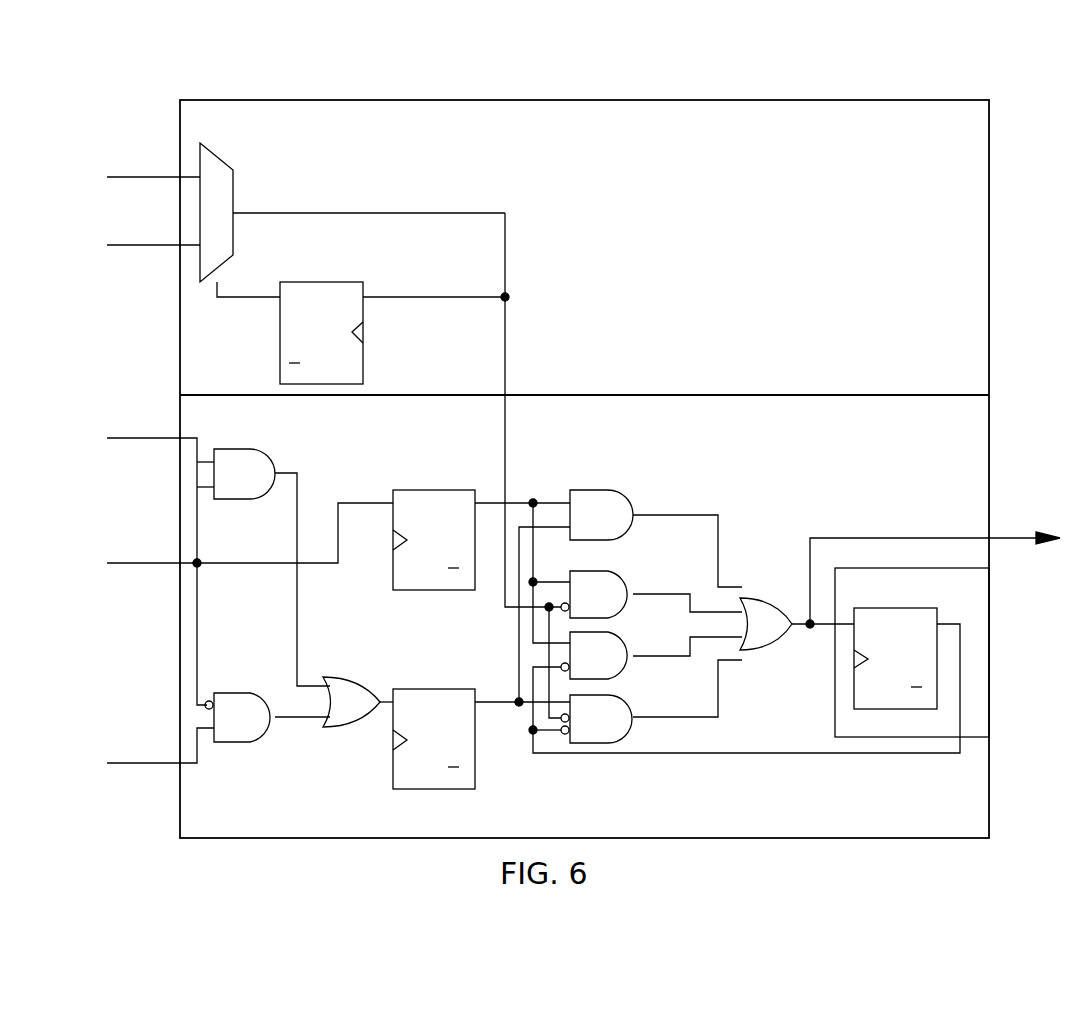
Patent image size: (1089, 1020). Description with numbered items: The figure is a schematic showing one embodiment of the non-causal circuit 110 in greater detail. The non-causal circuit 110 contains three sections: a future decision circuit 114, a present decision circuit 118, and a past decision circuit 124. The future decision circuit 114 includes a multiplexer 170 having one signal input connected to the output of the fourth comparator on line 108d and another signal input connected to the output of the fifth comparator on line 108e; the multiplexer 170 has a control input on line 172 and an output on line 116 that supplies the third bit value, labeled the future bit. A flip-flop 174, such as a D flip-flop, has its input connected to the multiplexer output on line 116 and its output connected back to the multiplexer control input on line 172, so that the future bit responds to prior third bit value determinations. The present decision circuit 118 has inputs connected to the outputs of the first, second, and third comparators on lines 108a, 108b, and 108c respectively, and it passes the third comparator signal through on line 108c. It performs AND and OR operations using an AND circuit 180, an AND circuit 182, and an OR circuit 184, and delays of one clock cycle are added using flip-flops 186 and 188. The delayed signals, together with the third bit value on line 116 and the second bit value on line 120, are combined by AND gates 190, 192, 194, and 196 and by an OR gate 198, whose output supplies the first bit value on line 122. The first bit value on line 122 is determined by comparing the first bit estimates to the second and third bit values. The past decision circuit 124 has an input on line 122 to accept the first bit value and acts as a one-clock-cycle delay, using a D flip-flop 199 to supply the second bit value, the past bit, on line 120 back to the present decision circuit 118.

The non-causal circuit 110 is at (989, 136).
The future decision circuit 114 is at (664, 224).
The line (third bit value output) 116 is at (505, 435).
The present decision circuit 118 is at (808, 827).
The line (second bit value) 120 is at (863, 754).
The line (first bit value output) 122 is at (1012, 536).
The past decision circuit 124 is at (889, 733).
The line (first comparator output) 108a is at (150, 440).
The line (second comparator output) 108b is at (135, 761).
The line (third comparator output) 108c is at (150, 565).
The line (fourth comparator output) 108d is at (150, 175).
The line (fifth comparator output) 108e is at (150, 243).
The multiplexer 170 is at (228, 160).
The line (MUX control input) 172 is at (257, 300).
The flip-flop 174 is at (320, 281).
The AND circuit 180 is at (242, 448).
The AND circuit 182 is at (242, 692).
The OR circuit 184 is at (335, 676).
The flip-flop 186 is at (437, 489).
The flip-flop 188 is at (437, 688).
The AND gate 190 is at (594, 489).
The AND gate 192 is at (630, 572).
The AND gate 194 is at (630, 633).
The AND gate 196 is at (630, 696).
The OR gate 198 is at (772, 599).
The D flip-flop 199 is at (937, 645).